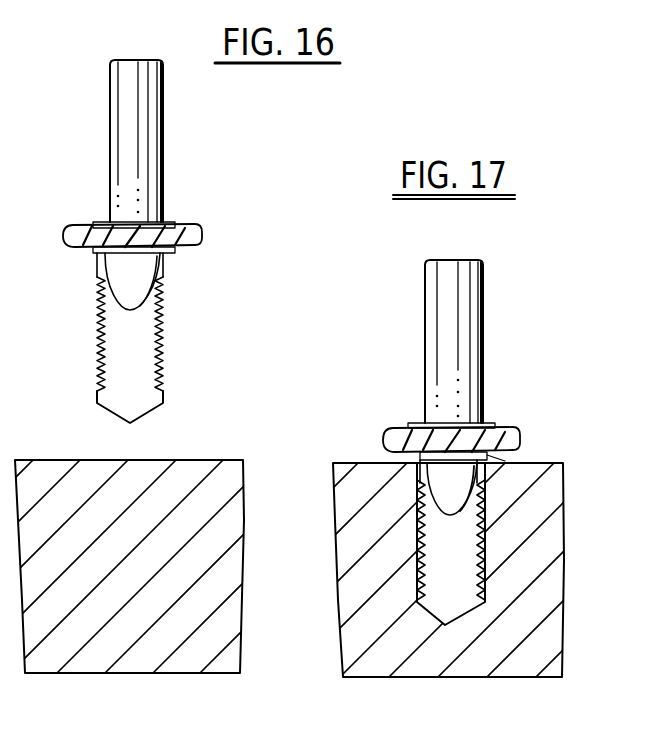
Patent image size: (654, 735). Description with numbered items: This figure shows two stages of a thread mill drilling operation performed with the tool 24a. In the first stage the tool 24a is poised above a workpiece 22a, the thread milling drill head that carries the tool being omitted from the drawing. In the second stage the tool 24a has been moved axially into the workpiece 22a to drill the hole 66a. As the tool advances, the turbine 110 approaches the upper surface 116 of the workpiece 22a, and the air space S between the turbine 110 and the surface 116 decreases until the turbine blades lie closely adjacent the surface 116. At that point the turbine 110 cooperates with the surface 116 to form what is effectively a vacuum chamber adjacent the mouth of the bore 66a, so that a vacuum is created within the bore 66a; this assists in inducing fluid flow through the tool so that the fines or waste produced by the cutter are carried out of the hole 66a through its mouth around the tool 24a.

In FIG. 16, the tool 24a is at (162, 166).
In FIG. 16, the turbine 110 is at (203, 233).
In FIG. 17, the turbine 110 is at (390, 446).
In FIG. 16, the workpiece 22a is at (168, 603).
In FIG. 17, the workpiece 22a is at (510, 648).
In FIG. 17, the upper surface 116 is at (352, 462).
In FIG. 17, the air space S is at (505, 459).
In FIG. 17, the hole 66a is at (490, 533).